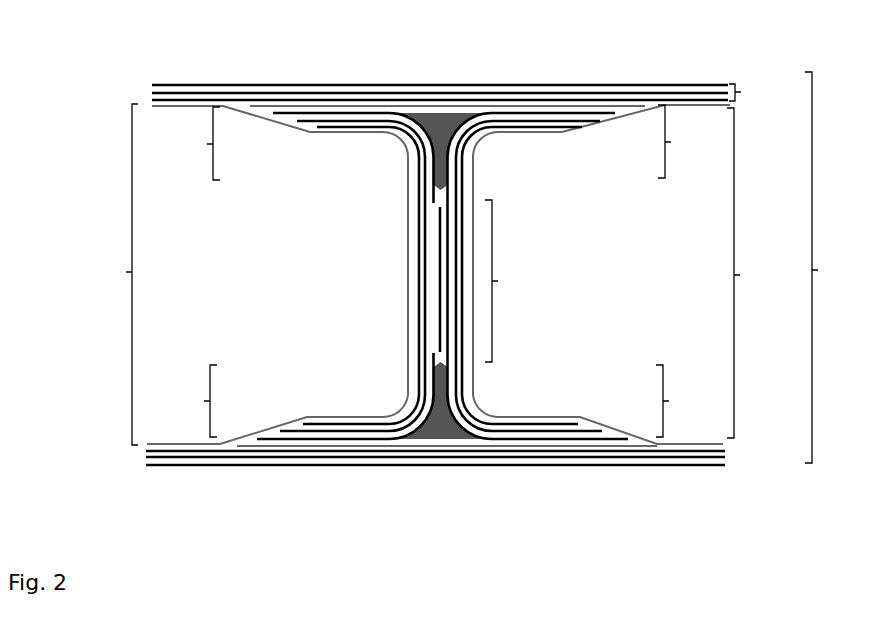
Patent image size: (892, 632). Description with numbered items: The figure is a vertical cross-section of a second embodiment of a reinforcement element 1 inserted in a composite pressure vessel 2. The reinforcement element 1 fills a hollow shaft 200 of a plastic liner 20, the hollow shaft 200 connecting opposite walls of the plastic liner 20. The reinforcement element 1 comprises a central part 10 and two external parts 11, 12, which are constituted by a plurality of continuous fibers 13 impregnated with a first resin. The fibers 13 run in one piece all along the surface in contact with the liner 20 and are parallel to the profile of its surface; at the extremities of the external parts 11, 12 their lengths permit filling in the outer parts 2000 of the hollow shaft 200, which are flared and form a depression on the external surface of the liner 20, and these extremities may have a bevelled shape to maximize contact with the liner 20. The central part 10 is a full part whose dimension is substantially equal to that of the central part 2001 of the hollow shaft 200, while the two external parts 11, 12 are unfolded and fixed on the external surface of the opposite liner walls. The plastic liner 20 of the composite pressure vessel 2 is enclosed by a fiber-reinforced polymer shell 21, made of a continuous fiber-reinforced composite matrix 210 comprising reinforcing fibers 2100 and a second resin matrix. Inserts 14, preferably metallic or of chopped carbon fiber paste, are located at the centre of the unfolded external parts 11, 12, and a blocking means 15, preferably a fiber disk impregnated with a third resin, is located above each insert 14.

The reinforcement element 1 is at (748, 273).
The composite pressure vessel 2 is at (834, 267).
The central part 10 is at (484, 276).
The external part 11 is at (431, 154).
The external part 12 is at (429, 396).
The continuous fibers 13 is at (579, 132).
The insert 14 is at (405, 40).
The blocking means 15 is at (555, 497).
The plastic liner 20 is at (136, 94).
The fiber-reinforced polymer shell 21 is at (133, 61).
The hollow shaft 200 is at (394, 274).
The continuous fiber-reinforced composite matrix 210 is at (474, 58).
The reinforcing fibers 2100 is at (695, 90).
The outer parts of the hollow shaft 2000 is at (325, 145).
The central part of the hollow shaft 2001 is at (394, 250).